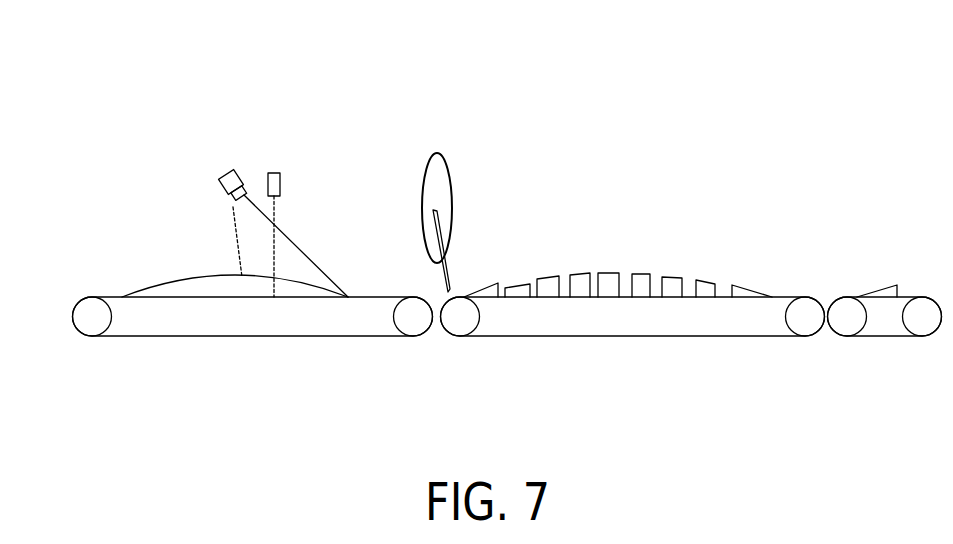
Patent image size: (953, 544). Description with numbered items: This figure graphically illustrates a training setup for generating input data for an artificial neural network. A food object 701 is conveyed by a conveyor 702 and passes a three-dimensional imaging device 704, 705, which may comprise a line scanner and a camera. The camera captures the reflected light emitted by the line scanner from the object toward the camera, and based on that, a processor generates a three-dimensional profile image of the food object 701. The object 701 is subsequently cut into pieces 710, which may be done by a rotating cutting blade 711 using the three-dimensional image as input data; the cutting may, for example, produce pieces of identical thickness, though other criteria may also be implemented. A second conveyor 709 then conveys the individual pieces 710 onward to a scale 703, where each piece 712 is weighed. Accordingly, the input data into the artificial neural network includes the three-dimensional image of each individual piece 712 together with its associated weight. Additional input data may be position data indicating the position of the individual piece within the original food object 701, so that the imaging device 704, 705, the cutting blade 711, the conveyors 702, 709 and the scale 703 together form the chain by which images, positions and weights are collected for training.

The food object 701 is at (192, 287).
The conveyor 702 is at (132, 318).
The scale 703 is at (878, 328).
The 3D imaging device 704 is at (222, 179).
The 3D imaging device 705 is at (277, 173).
The conveyor 709 is at (618, 323).
The pieces 710 is at (640, 278).
The rotating cutting blade 711 is at (452, 250).
The piece 712 is at (893, 289).